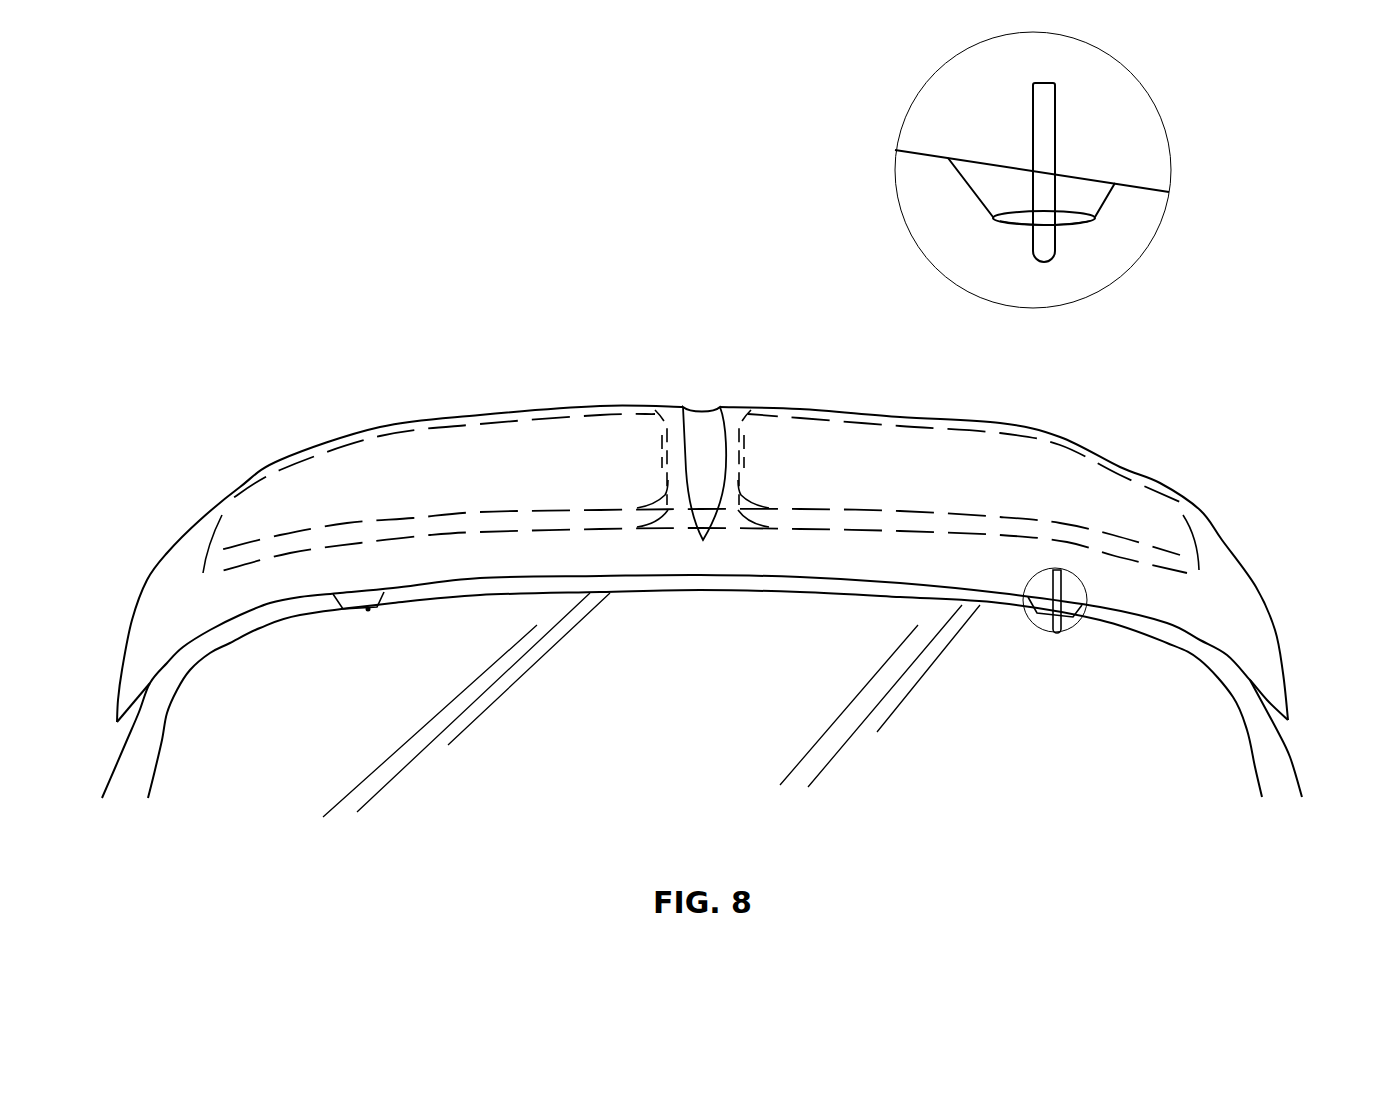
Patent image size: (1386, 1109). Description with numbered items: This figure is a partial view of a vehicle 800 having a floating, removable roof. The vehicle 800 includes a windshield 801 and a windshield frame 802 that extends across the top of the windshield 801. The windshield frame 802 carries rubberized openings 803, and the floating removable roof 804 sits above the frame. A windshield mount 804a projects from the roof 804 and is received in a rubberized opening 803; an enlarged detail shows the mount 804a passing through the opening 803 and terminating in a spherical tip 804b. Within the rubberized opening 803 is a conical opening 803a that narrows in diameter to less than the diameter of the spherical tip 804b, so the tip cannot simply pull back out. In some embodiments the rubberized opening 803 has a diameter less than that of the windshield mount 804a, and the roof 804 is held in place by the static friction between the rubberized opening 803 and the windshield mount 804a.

The vehicle 800 is at (734, 424).
The windshield 801 is at (690, 743).
The windshield frame 802 is at (1292, 758).
The rubberized openings 803 is at (333, 630).
The conical opening 803a is at (1018, 227).
The floating removable roof 804 is at (683, 407).
The windshield mount 804a is at (1033, 120).
The spherical tip 804b is at (1056, 252).